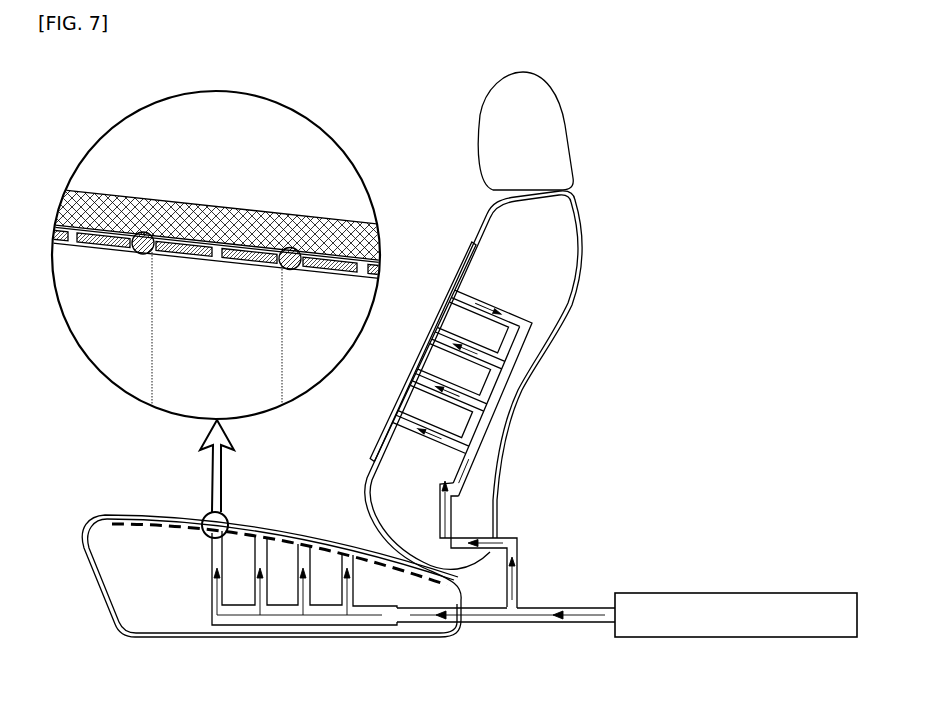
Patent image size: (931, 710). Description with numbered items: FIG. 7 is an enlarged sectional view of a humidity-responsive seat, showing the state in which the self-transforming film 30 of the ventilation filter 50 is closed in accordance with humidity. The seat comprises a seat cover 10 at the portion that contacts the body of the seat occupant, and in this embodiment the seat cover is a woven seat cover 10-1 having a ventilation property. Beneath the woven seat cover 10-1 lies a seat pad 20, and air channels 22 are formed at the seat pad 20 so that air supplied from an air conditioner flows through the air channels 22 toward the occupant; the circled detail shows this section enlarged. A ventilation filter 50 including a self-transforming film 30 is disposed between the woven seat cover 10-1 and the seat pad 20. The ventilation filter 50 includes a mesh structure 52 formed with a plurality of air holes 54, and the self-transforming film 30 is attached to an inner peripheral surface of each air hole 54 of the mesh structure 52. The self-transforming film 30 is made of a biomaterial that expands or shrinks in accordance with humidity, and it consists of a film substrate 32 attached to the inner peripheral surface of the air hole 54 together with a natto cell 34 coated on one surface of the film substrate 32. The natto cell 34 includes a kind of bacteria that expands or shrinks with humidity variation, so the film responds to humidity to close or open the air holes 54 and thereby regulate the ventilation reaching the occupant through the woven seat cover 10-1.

The seat cover 10 is at (128, 516).
The woven seat cover 10-1 is at (275, 215).
The seat pad 20 is at (148, 590).
The air channels 22 is at (213, 555).
The self-transforming film 30 is at (198, 268).
The film substrate 32 is at (213, 240).
The natto cell 34 is at (170, 258).
The ventilation filter 50 is at (181, 226).
The mesh structure 52 is at (143, 231).
The air holes 54 is at (222, 262).